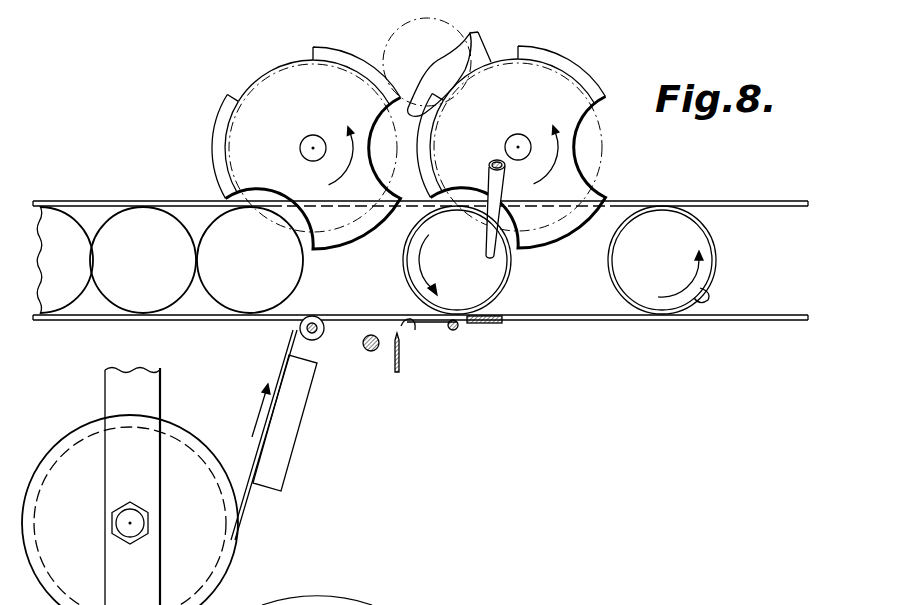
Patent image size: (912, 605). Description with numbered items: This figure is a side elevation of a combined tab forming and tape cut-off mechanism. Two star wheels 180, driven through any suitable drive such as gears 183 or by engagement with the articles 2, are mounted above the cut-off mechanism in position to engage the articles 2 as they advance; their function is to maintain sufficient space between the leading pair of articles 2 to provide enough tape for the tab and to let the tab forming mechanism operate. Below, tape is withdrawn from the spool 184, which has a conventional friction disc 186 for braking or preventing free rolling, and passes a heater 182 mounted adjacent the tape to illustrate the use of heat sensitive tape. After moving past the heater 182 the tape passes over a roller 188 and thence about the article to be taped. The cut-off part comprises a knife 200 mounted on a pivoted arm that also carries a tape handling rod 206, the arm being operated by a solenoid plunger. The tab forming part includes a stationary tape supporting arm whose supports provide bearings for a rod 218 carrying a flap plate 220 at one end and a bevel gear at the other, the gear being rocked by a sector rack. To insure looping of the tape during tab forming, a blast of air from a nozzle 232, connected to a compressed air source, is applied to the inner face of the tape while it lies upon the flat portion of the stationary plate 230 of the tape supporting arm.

The star wheel 180 is at (342, 31).
The gears 183 is at (470, 43).
The nozzle 232 is at (490, 163).
The articles 2 is at (160, 220).
The roller 188 is at (314, 340).
The tape handling rod 206 is at (368, 352).
The knife 200 is at (400, 363).
The flap plate 220 is at (415, 330).
The rod 218 is at (457, 330).
The stationary plate 230 is at (503, 321).
The heater 182 is at (291, 440).
The spool 184 is at (228, 541).
The friction disc 186 is at (237, 568).